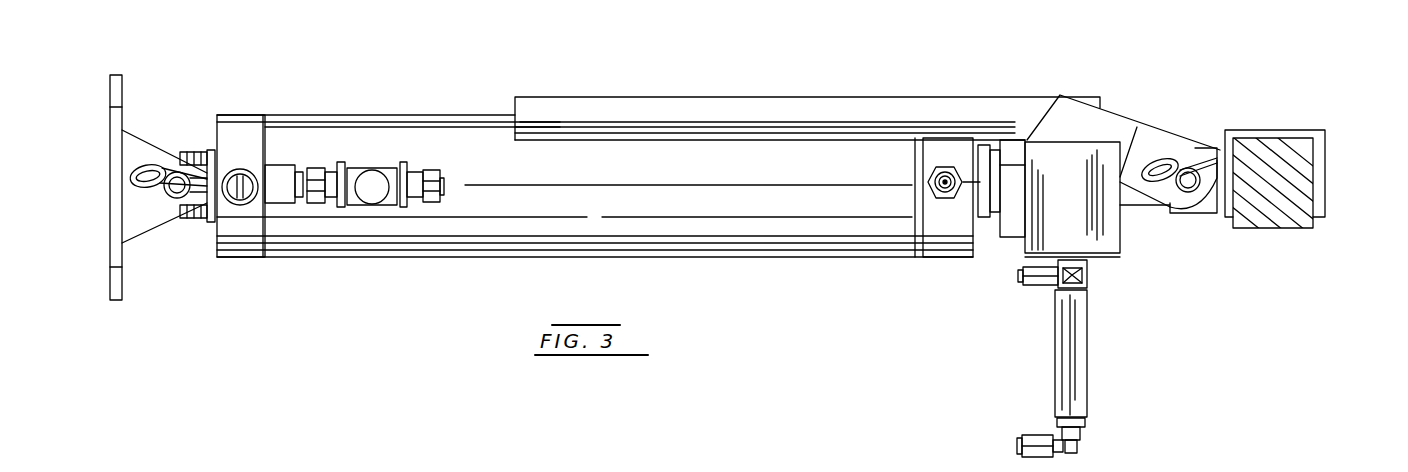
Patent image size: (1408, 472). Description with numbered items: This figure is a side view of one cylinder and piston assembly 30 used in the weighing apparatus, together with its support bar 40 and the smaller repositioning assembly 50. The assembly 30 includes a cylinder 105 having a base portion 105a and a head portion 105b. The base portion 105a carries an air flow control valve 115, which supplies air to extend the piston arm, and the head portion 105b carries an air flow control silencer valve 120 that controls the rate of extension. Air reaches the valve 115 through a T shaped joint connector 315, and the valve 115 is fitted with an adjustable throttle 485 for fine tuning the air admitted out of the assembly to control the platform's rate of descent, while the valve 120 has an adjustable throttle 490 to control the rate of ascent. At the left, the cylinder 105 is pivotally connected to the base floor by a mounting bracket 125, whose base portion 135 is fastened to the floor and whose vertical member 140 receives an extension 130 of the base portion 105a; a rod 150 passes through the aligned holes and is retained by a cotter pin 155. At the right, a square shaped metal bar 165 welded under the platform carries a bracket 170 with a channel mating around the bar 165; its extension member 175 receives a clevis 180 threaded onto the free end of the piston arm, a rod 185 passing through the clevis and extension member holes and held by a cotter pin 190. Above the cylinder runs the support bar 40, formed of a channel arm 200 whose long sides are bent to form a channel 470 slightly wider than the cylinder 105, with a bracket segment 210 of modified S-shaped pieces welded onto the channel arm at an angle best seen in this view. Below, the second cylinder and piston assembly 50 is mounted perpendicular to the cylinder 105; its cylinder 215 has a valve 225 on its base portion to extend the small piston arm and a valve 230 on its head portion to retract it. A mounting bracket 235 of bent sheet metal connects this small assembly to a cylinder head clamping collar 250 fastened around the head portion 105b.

The cylinder and piston assembly 30 is at (608, 187).
The support bar 40 is at (951, 190).
The second cylinder and piston assembly 50 is at (1071, 352).
The cylinder 105 is at (668, 235).
The base portion 105a is at (248, 232).
The head portion 105b is at (958, 223).
The air flow control valve 115 is at (278, 172).
The air flow control silencer valve 120 is at (928, 183).
The mounting bracket 125 is at (158, 189).
The extension 130 is at (183, 147).
The base portion 135 is at (120, 250).
The vertical member 140 is at (140, 215).
The rod 150 is at (180, 195).
The cotter pin 155 is at (152, 158).
The square shaped metal bar 165 is at (1282, 207).
The bracket 170 is at (1318, 155).
The extension member 175 is at (1216, 132).
The clevis 180 is at (1130, 197).
The rod 185 is at (1187, 184).
The cotter pin 190 is at (1153, 168).
The channel arm 200 is at (668, 100).
The bracket segment 210 is at (1103, 128).
The cylinder 215 is at (1073, 360).
The valve 225 is at (1022, 457).
The valve 230 is at (1042, 280).
The mounting bracket 235 is at (1126, 238).
The cylinder head clamping collar 250 is at (1013, 223).
The T shaped joint connector 315 is at (373, 189).
The channel 470 is at (500, 100).
The adjustable throttle 485 is at (251, 190).
The adjustable throttle 490 is at (937, 200).